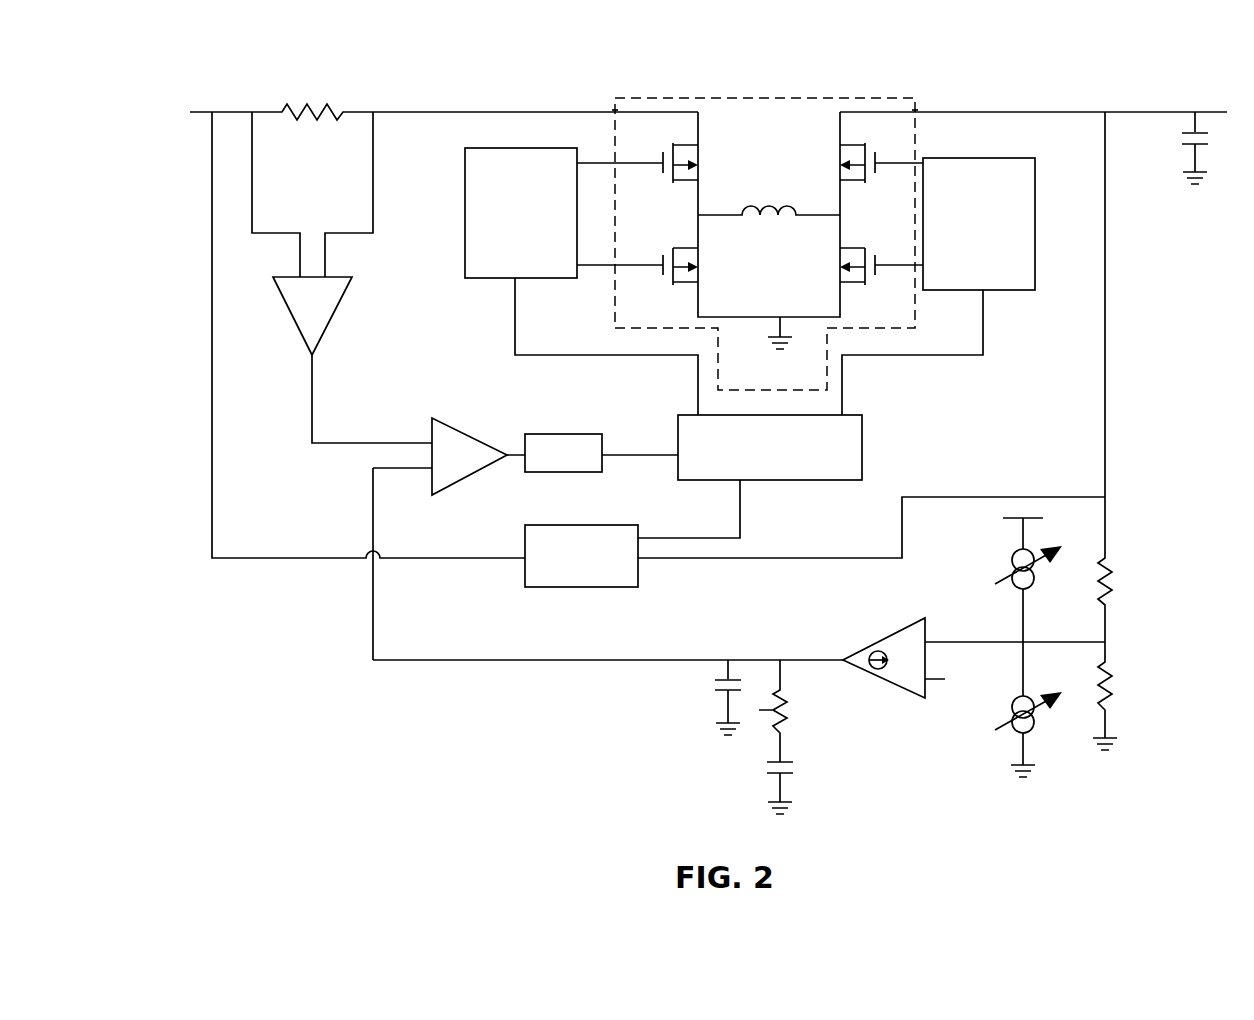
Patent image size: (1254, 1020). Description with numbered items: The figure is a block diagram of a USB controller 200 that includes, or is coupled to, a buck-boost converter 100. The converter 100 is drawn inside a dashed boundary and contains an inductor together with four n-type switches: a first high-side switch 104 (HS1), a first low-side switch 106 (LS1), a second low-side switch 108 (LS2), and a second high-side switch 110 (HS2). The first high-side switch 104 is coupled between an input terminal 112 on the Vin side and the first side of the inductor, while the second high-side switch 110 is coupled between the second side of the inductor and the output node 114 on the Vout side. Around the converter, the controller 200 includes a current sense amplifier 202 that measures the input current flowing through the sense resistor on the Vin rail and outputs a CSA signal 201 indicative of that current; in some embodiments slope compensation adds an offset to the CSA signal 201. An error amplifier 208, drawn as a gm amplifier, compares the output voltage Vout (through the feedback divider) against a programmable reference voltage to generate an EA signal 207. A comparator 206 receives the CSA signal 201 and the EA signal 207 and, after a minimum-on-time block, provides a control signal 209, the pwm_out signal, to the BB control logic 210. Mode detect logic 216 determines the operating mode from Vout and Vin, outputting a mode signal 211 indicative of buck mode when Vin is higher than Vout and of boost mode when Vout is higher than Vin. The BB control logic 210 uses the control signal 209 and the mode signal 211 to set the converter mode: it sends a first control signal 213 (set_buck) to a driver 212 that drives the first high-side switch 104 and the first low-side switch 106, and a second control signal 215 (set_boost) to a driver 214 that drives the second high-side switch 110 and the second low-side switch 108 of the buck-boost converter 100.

The buck-boost converter 100 is at (765, 244).
The first high-side switch 104 is at (663, 160).
The first low-side switch 106 is at (673, 248).
The second low-side switch 108 is at (865, 248).
The second high-side switch 110 is at (877, 160).
The input terminal 112 is at (615, 112).
The output node 114 is at (915, 112).
The USB controller 200 is at (148, 79).
The CSA signal 201 is at (312, 378).
The current sense amplifier 202 is at (283, 291).
The comparator 206 is at (487, 447).
The EA signal 207 is at (557, 660).
The error amplifier 208 is at (913, 716).
The control signal 209 is at (612, 455).
The BB control logic 210 is at (770, 447).
The mode signal 211 is at (670, 538).
The driver 212 is at (564, 213).
The first control signal 213 is at (516, 355).
The driver 214 is at (955, 224).
The second control signal 215 is at (946, 355).
The mode detect logic 216 is at (540, 526).